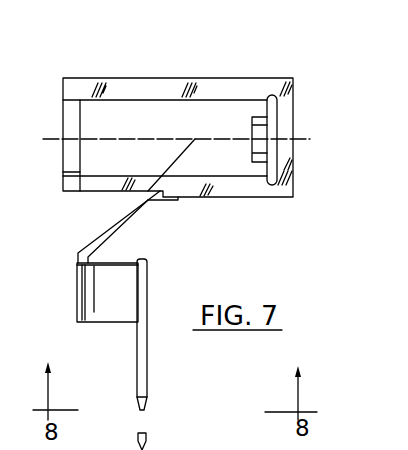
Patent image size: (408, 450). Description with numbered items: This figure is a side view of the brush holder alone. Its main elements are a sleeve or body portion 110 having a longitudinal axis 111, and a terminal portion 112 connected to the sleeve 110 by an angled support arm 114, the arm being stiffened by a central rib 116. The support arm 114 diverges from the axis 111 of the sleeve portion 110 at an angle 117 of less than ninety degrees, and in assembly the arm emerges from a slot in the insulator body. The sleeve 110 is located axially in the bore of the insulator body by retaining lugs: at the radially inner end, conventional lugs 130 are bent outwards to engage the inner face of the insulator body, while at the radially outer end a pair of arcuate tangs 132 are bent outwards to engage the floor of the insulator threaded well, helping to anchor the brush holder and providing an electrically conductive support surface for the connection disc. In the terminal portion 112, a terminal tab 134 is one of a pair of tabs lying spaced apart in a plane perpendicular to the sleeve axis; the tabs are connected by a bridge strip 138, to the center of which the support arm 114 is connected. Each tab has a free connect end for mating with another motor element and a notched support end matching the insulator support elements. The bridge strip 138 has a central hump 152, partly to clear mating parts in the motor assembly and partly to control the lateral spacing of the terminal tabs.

The sleeve 110 is at (146, 61).
The arcuate tangs 132 is at (62, 112).
The lugs 130 is at (263, 117).
The longitudinal axis 111 is at (52, 143).
The angle 117 is at (148, 140).
The support arm 114 is at (118, 227).
The central rib 116 is at (138, 214).
The terminal portion 112 is at (126, 354).
The central hump 152 is at (77, 289).
The bridge strip 138 is at (108, 322).
The terminal tab 134 is at (148, 388).